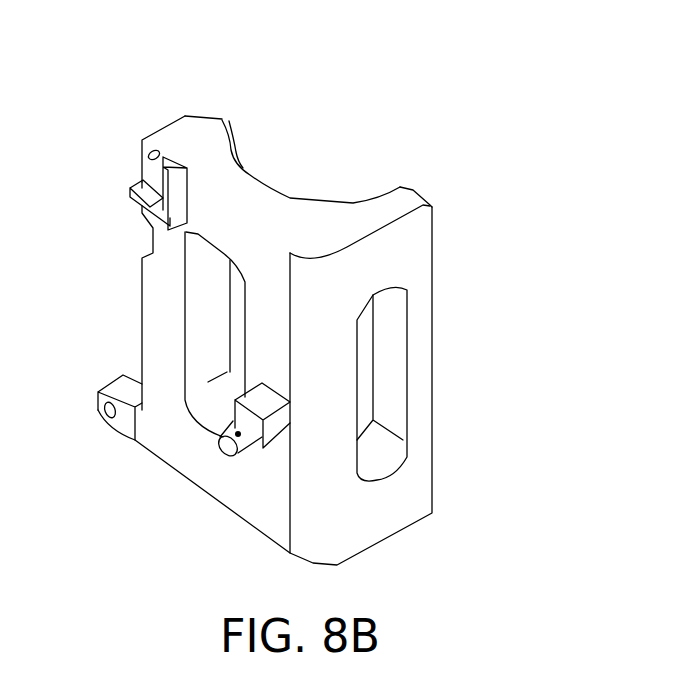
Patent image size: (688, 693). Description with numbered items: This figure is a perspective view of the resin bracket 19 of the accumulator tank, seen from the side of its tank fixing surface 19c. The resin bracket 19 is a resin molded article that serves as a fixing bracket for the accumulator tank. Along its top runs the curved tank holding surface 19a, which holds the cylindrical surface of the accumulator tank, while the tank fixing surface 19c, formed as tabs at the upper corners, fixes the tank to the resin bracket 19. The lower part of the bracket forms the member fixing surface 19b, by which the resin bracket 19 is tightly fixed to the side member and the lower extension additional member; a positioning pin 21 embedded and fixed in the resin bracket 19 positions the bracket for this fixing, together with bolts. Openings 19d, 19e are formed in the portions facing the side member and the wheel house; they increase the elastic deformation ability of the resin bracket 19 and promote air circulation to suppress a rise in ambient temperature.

The resin bracket 19 is at (104, 25).
The tank holding surface 19a is at (292, 200).
The member fixing surface 19b is at (195, 448).
The tank fixing surface 19c is at (203, 118).
The opening 19d is at (205, 303).
The opening 19e is at (391, 358).
The positioning pin 21 is at (250, 447).